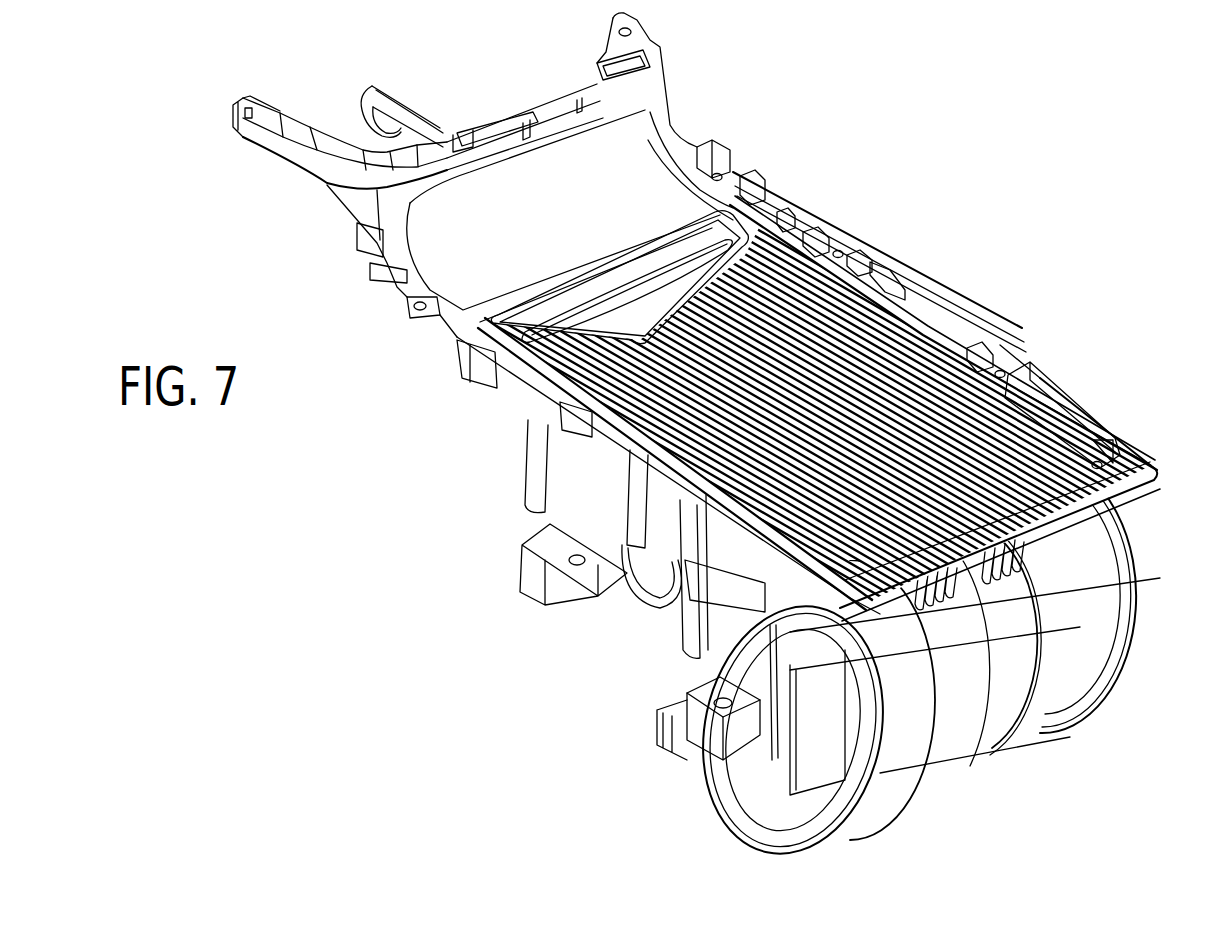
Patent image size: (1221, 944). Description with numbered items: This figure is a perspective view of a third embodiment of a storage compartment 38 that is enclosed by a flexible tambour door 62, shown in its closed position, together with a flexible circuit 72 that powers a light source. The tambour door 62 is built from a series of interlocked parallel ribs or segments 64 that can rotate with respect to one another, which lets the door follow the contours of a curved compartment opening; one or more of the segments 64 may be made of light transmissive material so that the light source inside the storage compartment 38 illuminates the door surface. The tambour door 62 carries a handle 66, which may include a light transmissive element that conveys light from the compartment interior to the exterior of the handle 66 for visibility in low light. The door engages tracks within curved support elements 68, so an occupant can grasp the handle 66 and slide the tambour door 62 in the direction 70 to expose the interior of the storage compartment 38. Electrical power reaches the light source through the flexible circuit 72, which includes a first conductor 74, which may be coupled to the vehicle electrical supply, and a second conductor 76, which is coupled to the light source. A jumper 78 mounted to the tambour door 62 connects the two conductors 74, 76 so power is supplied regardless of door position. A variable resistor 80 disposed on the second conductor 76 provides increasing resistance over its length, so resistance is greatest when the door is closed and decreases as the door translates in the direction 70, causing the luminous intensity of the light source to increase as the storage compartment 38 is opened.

The storage compartment 38 is at (903, 208).
The tambour door 62 is at (893, 367).
The segments 64 is at (1027, 430).
The handle 66 is at (657, 252).
The curved support elements 68 is at (830, 617).
The direction 70 is at (910, 660).
The flexible circuit 72 is at (991, 784).
The first conductor 74 is at (953, 687).
The second conductor 76 is at (1017, 650).
The jumper 78 is at (927, 680).
The variable resistor 80 is at (987, 673).